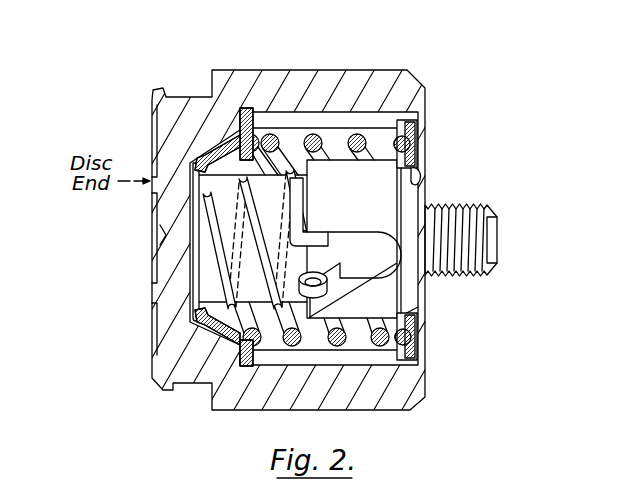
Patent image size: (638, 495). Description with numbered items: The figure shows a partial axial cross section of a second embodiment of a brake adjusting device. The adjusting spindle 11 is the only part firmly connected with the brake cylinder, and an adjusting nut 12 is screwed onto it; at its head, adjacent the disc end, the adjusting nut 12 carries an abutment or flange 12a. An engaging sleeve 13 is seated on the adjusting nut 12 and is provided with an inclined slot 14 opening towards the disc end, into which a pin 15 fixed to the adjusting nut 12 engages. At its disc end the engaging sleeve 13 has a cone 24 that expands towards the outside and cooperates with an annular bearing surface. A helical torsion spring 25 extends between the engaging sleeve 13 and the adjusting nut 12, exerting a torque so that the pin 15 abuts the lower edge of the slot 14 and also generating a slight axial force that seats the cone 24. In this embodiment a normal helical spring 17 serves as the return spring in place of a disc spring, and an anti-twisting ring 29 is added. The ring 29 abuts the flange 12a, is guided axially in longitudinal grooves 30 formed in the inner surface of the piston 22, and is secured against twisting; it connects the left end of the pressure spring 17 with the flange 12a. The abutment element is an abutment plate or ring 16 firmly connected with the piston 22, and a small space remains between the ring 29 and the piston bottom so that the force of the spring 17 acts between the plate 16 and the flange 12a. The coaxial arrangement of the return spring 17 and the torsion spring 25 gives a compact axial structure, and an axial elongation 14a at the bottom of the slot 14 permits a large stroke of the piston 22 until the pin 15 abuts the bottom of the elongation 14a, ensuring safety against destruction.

The adjusting spindle 11 is at (475, 206).
The adjusting nut 12 is at (200, 207).
The flange 12a is at (193, 308).
The engaging sleeve 13 is at (362, 239).
The inclined slot 14 is at (332, 252).
The axial elongation 14a is at (378, 258).
The pin 15 is at (327, 290).
The abutment plate or ring 16 is at (415, 147).
The helical spring 17 is at (290, 346).
The piston 22 is at (325, 103).
The cone 24 is at (420, 180).
The helical torsion spring 25 is at (213, 232).
The anti-twisting ring 29 is at (248, 110).
The longitudinal grooves 30 is at (285, 118).